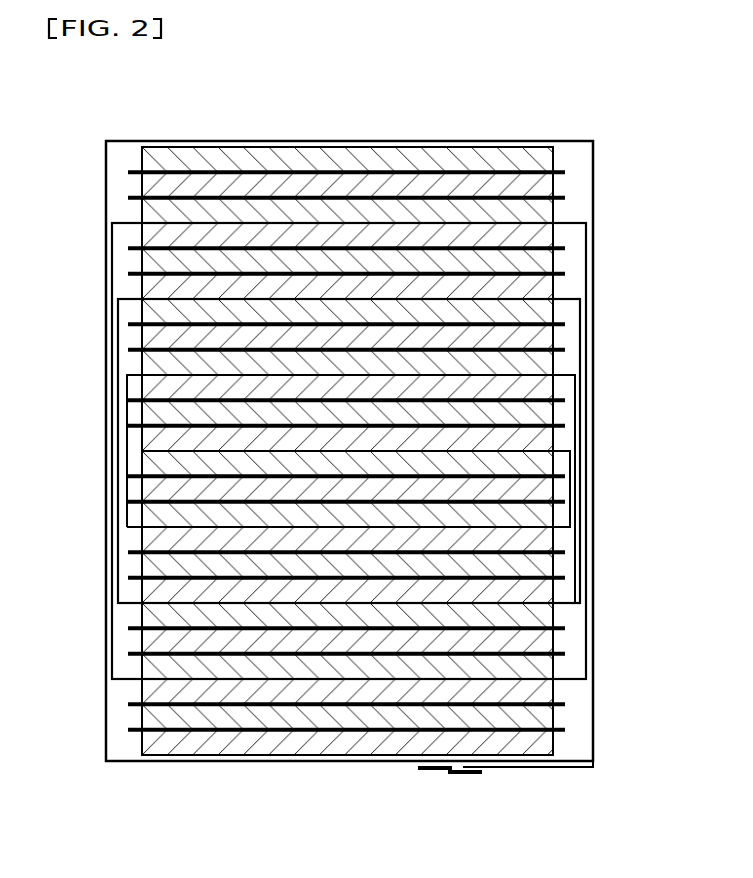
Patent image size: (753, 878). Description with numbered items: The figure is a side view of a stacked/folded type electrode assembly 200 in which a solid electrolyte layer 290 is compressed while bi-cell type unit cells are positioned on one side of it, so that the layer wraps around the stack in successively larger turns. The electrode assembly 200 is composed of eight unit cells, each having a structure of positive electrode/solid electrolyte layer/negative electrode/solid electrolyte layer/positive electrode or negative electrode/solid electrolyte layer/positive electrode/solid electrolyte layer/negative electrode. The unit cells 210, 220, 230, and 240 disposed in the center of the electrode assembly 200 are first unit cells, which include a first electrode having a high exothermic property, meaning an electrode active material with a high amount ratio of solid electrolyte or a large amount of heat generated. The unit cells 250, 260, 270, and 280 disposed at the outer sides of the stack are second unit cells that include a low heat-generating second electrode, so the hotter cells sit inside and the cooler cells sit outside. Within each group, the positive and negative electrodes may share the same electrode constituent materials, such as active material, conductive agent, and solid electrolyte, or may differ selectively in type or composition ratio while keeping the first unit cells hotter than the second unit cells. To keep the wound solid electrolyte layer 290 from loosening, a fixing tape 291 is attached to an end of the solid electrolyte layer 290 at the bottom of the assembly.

The electrode assembly 200 is at (93, 118).
The first unit cell 210 is at (608, 451).
The first unit cell 220 is at (608, 375).
The first unit cell 230 is at (608, 527).
The first unit cell 240 is at (608, 299).
The second unit cell 250 is at (608, 603).
The second unit cell 260 is at (608, 223).
The second unit cell 270 is at (608, 679).
The second unit cell 280 is at (608, 147).
The solid electrolyte layer 290 is at (220, 762).
The fixing tape 291 is at (450, 773).